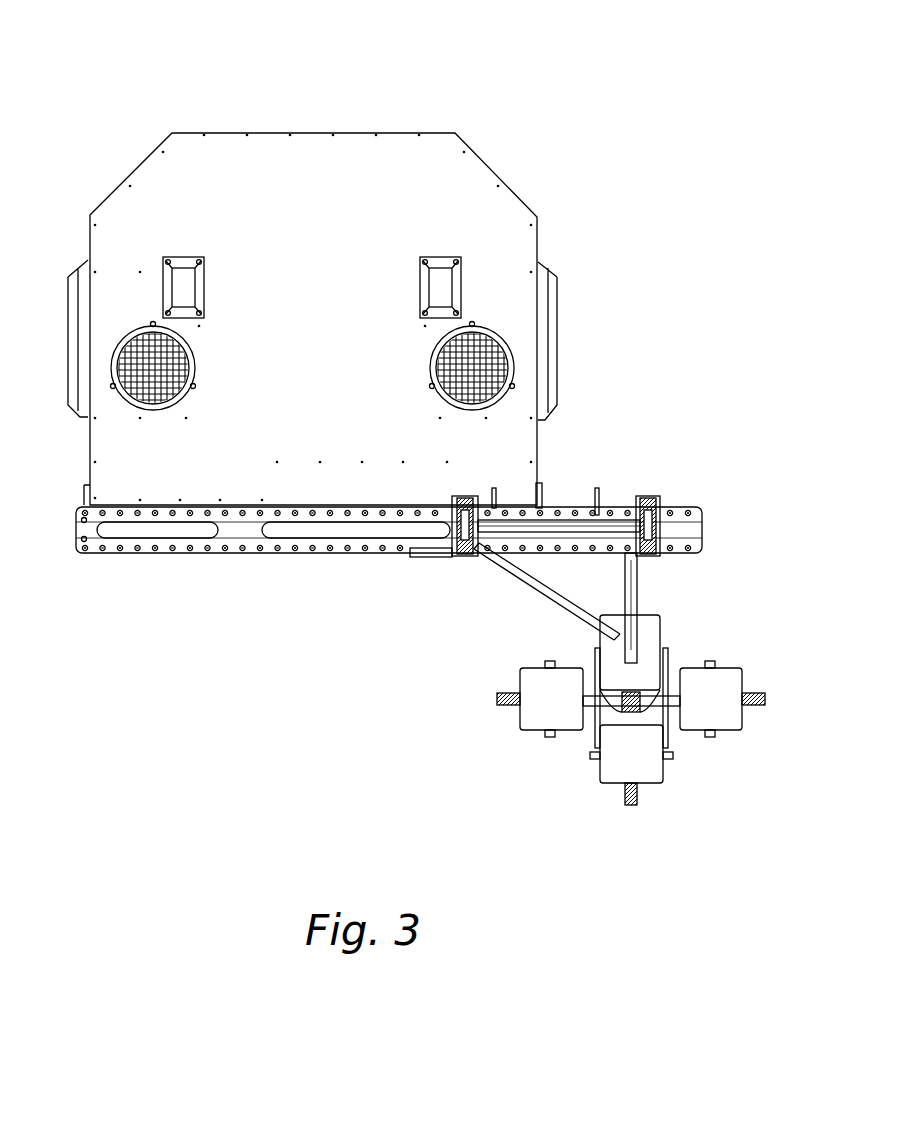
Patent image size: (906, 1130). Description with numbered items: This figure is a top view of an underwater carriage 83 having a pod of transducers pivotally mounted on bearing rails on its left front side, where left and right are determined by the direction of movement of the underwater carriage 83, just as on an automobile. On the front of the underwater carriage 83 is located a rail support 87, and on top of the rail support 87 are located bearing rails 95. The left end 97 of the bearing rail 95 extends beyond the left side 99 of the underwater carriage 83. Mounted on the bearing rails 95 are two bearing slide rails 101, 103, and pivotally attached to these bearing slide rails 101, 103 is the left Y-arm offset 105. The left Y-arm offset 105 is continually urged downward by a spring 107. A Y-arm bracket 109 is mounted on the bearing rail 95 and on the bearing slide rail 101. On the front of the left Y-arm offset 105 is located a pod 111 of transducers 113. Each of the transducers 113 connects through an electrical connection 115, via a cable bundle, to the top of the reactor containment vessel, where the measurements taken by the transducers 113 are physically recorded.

The underwater carriage 83 is at (118, 128).
The left side 99 is at (537, 240).
The rail support 87 is at (205, 553).
The bearing rails 95 is at (143, 512).
The left end 97 is at (704, 530).
The bearing slide rail 101 is at (450, 500).
The bearing slide rail 103 is at (652, 492).
The spring 107 is at (593, 495).
The Y-arm bracket 109 is at (430, 558).
The left Y-arm offset 105 is at (530, 582).
The pod 111 is at (550, 792).
The transducers 113 is at (572, 713).
The electrical connection 115 is at (497, 697).